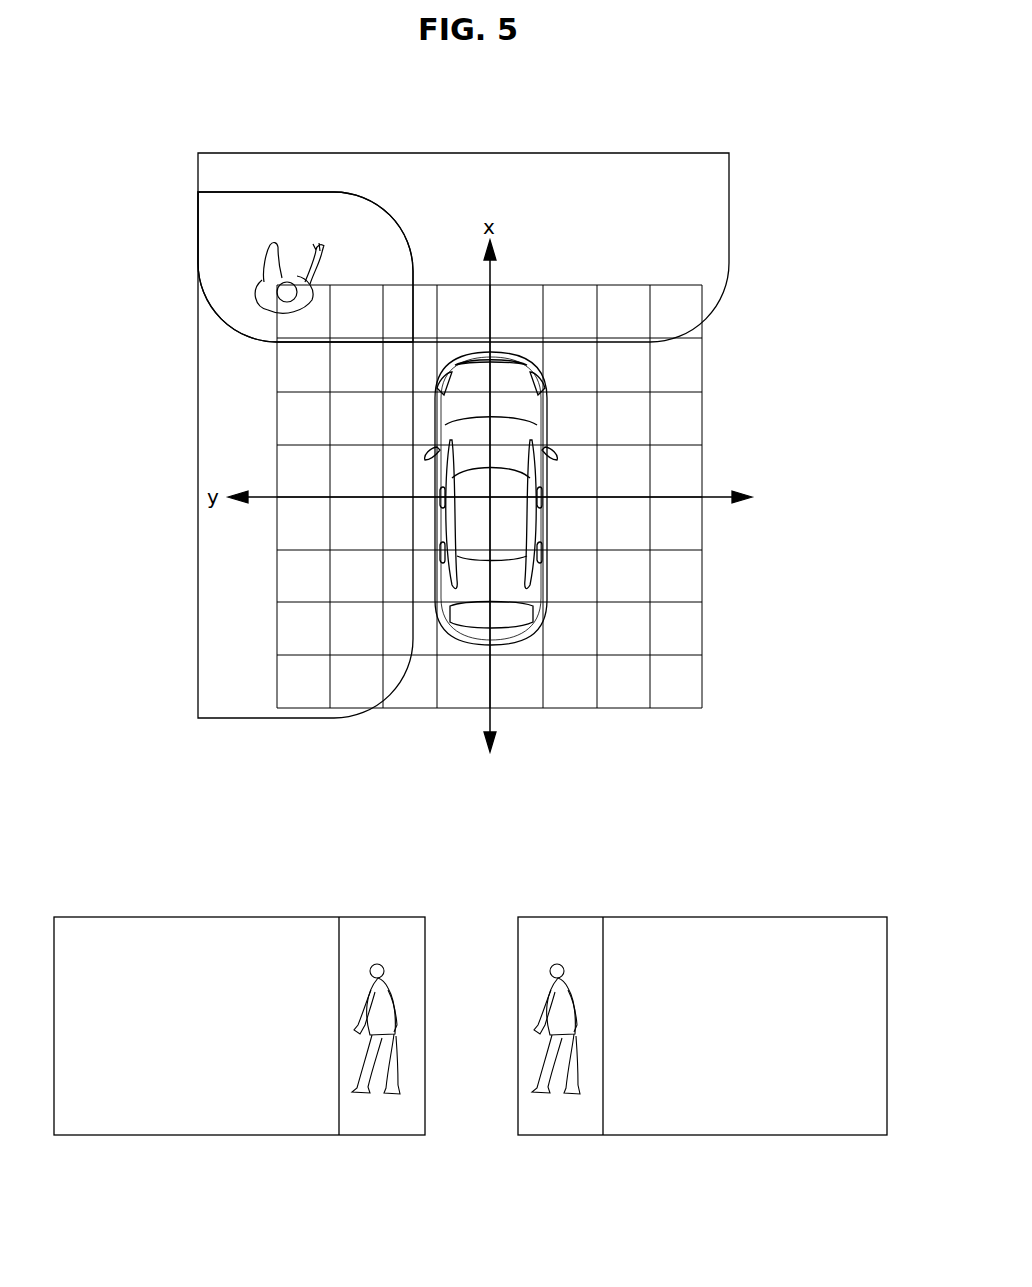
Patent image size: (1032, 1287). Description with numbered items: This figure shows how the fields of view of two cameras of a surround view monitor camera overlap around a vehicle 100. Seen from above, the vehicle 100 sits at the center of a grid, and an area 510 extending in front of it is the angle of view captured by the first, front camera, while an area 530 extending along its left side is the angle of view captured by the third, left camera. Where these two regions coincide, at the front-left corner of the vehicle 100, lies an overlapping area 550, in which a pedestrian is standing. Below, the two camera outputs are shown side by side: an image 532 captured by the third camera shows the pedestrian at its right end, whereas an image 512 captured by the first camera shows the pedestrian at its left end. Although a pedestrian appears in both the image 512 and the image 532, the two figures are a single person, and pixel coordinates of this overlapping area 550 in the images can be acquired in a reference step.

The vehicle 100 is at (533, 532).
The area captured by first camera (front) 510 is at (747, 117).
The area captured by third camera (left) 530 is at (208, 648).
The overlapping area 550 is at (545, 927).
The image captured by first camera (front) 512 is at (723, 1122).
The image captured by third camera (left) 532 is at (223, 1123).